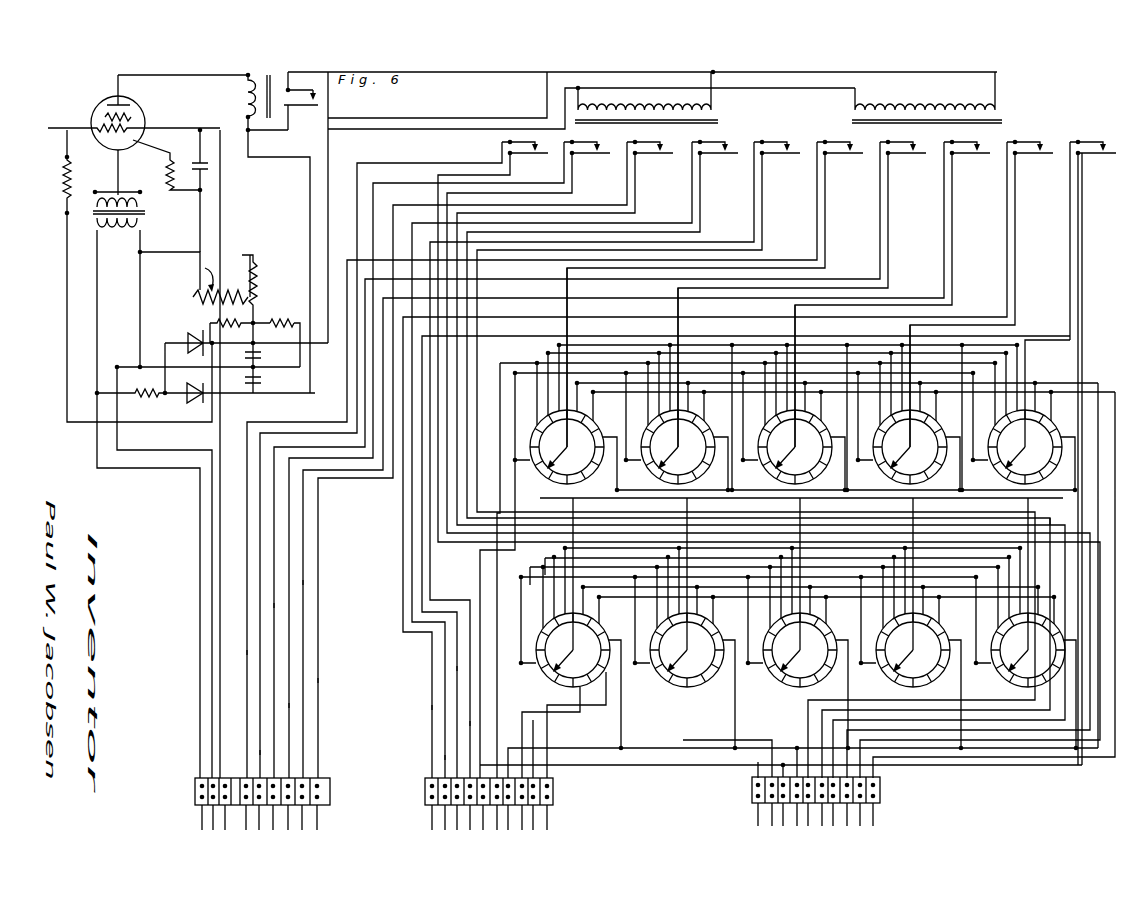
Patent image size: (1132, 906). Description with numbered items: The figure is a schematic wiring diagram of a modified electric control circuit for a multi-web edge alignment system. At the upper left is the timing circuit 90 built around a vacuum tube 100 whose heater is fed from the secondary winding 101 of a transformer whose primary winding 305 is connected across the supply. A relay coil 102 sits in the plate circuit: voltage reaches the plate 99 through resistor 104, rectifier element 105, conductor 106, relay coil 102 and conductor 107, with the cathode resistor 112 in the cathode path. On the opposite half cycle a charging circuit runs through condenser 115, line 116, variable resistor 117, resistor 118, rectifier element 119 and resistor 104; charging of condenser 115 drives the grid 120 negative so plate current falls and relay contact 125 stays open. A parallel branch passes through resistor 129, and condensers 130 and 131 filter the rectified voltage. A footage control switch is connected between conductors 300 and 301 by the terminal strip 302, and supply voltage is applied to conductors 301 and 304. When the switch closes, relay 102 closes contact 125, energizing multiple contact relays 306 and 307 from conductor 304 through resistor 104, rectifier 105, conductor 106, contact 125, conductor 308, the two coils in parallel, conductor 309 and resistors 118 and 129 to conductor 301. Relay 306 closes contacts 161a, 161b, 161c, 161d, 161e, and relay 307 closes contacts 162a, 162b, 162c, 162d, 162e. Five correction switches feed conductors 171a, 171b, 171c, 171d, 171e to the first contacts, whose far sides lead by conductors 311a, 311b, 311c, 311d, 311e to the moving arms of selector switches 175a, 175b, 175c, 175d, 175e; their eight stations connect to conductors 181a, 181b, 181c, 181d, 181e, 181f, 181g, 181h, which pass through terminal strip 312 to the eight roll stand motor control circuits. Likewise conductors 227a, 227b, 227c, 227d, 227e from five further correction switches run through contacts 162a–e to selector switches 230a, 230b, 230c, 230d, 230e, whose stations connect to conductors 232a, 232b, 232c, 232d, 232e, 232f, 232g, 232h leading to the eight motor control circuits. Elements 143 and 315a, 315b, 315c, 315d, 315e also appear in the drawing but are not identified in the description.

The timing circuit 90 is at (92, 116).
The plate 99 is at (115, 101).
The vacuum tube 100 is at (134, 114).
The secondary winding 101 is at (121, 196).
The relay coil 102 is at (244, 100).
The resistor 104 is at (137, 397).
The rectifier element 105 is at (206, 397).
The conductor 106 is at (310, 235).
The conductor 107 is at (172, 76).
The cathode resistor 112 is at (176, 150).
The condenser 115 is at (210, 167).
The line 116 is at (220, 226).
The variable resistor 117 is at (194, 278).
The resistor 118 is at (216, 323).
The rectifier element 119 is at (186, 340).
The grid 120 is at (119, 126).
The relay contact 125 is at (289, 118).
The resistor 129 is at (283, 322).
The condenser 130 is at (261, 356).
The condenser 131 is at (261, 381).
The resistor 143 is at (72, 178).
The contact 161a is at (515, 157).
The contact 161b is at (578, 157).
The contact 161c is at (640, 157).
The contact 161d is at (705, 157).
The contact 161e is at (767, 157).
The contact 162a is at (830, 157).
The contact 162b is at (893, 157).
The contact 162c is at (957, 157).
The contact 162d is at (1020, 157).
The contact 162e is at (1083, 157).
The conductor 171a is at (263, 754).
The conductor 171b is at (292, 706).
The conductor 171c is at (320, 681).
The conductor 171d is at (443, 757).
The conductor 171e is at (468, 724).
The selector switch 175a is at (574, 660).
The selector switch 175b is at (688, 660).
The selector switch 175c is at (801, 662).
The selector switch 175d is at (913, 660).
The selector switch 175e is at (1028, 660).
The line 181a is at (522, 680).
The conductor 181b is at (515, 590).
The conductor 181c is at (533, 720).
The conductor 181d is at (702, 692).
The conductor 181e is at (1012, 718).
The conductor 181f is at (987, 728).
The conductor 181g is at (640, 752).
The conductor 181h is at (883, 772).
The conductor 227a is at (250, 652).
The conductor 227b is at (275, 606).
The conductor 227c is at (304, 582).
The conductor 227d is at (430, 707).
The conductor 227e is at (455, 668).
The selector switch 230a is at (566, 460).
The selector switch 230b is at (678, 460).
The selector switch 230c is at (795, 460).
The selector switch 230d is at (910, 460).
The selector switch 230e is at (1025, 460).
The conductor 232a is at (781, 465).
The conductor 232b is at (803, 759).
The conductor 232c is at (632, 687).
The conductor 232d is at (756, 766).
The conductor 232e is at (842, 664).
The conductor 232f is at (1078, 392).
The conductor 232g is at (1050, 525).
The conductor 232h is at (930, 757).
The conductor 300 is at (219, 562).
The conductor 301 is at (210, 606).
The terminal strip 302 is at (193, 795).
The conductor 304 is at (199, 697).
The primary winding 305 is at (118, 232).
The multiple contact relay 306 is at (628, 108).
The multiple contact relay 307 is at (903, 104).
The conductor 308 is at (421, 117).
The conductor 309 is at (388, 129).
The conductor 311a is at (438, 177).
The conductor 311b is at (575, 190).
The conductor 311c is at (665, 210).
The conductor 311d is at (730, 214).
The conductor 311e is at (795, 227).
The terminal strip 312 is at (556, 785).
The conductor 315a is at (858, 232).
The conductor 315b is at (918, 227).
The conductor 315c is at (982, 223).
The conductor 315d is at (1040, 235).
The conductor 315e is at (1105, 223).